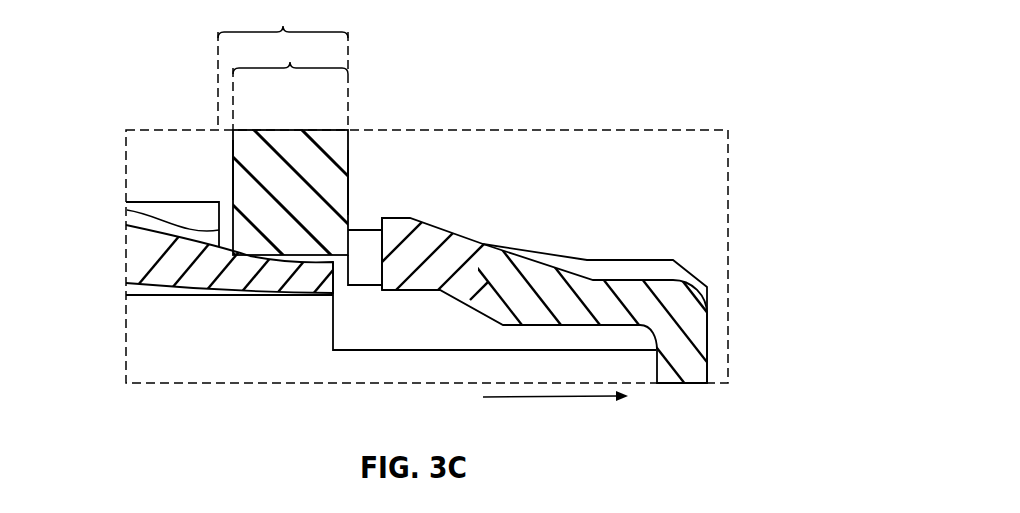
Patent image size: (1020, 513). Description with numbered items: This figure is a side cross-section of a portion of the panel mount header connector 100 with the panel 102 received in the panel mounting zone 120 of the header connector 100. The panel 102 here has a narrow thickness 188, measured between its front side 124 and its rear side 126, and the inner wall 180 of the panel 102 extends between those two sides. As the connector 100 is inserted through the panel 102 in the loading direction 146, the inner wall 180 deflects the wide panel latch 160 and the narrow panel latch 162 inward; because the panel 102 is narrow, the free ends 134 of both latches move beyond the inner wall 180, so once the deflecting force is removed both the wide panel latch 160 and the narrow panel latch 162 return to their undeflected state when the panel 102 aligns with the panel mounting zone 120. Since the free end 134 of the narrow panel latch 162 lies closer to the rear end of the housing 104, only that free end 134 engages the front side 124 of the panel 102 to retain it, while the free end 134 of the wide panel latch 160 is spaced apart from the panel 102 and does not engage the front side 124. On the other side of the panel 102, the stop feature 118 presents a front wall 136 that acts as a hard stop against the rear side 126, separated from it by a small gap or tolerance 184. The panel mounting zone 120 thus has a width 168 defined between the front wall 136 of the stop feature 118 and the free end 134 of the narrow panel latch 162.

The panel mount header connector 100 is at (733, 265).
The panel 102 is at (274, 157).
The housing 104 is at (541, 270).
The stop feature 118 is at (355, 254).
The panel mounting zone 120 is at (228, 212).
The front side 124 is at (348, 184).
The rear side 126 is at (232, 163).
The free end 134 is at (348, 190).
The front wall 136 is at (127, 210).
The loading direction 146 is at (540, 397).
The wide panel latch 160 is at (440, 263).
The narrow panel latch 162 is at (363, 265).
The width 168 is at (283, 65).
The inner wall 180 is at (310, 252).
The gap 184 is at (215, 195).
The narrow thickness 188 is at (290, 82).